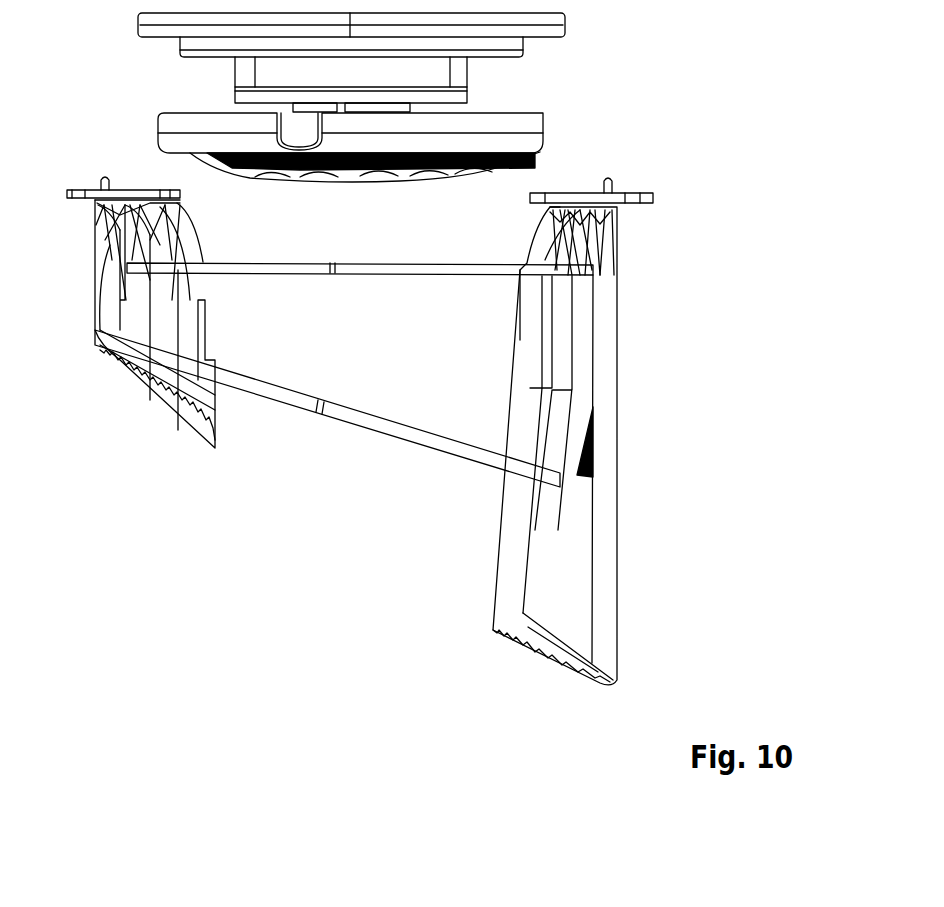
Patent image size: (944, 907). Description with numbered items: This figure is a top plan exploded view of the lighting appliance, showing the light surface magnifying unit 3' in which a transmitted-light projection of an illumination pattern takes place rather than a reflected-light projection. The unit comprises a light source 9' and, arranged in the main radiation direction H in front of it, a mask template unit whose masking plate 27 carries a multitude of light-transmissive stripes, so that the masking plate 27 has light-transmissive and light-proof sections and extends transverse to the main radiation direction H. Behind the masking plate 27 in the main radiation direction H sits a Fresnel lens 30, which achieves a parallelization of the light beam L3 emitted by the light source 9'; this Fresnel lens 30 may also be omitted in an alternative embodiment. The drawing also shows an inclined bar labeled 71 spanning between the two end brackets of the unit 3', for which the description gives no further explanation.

The light source 9' is at (396, 62).
The Fresnel lens 30 is at (467, 175).
The light surface magnifying unit 3' is at (350, 431).
The masking plate 27 is at (420, 270).
The inclined support bar 71 is at (422, 447).
The light beam L3 is at (272, 458).
The main radiation direction H is at (325, 568).